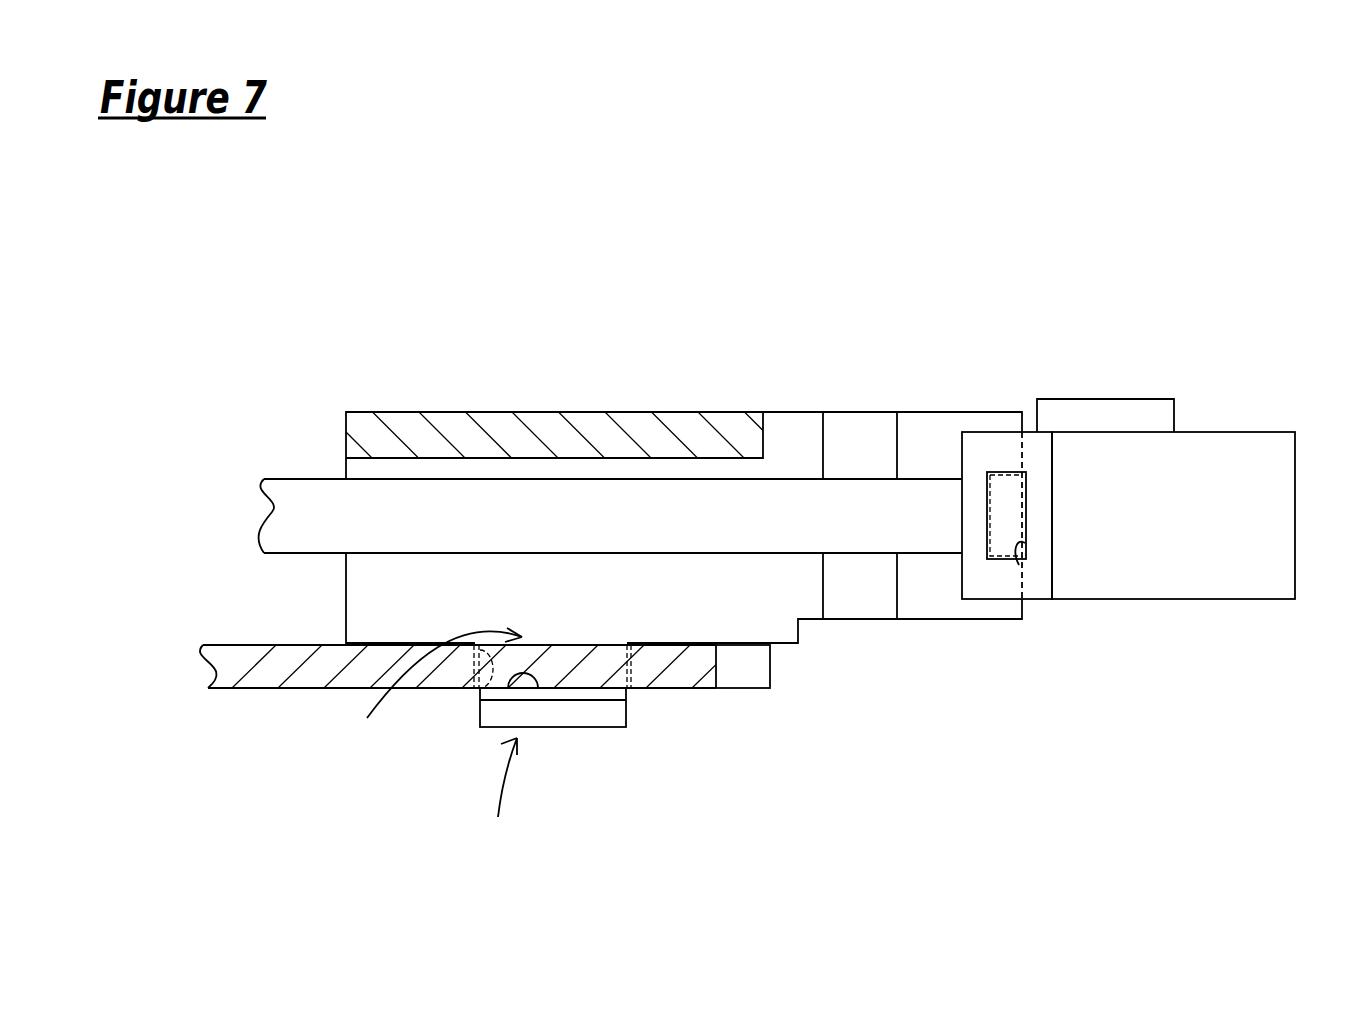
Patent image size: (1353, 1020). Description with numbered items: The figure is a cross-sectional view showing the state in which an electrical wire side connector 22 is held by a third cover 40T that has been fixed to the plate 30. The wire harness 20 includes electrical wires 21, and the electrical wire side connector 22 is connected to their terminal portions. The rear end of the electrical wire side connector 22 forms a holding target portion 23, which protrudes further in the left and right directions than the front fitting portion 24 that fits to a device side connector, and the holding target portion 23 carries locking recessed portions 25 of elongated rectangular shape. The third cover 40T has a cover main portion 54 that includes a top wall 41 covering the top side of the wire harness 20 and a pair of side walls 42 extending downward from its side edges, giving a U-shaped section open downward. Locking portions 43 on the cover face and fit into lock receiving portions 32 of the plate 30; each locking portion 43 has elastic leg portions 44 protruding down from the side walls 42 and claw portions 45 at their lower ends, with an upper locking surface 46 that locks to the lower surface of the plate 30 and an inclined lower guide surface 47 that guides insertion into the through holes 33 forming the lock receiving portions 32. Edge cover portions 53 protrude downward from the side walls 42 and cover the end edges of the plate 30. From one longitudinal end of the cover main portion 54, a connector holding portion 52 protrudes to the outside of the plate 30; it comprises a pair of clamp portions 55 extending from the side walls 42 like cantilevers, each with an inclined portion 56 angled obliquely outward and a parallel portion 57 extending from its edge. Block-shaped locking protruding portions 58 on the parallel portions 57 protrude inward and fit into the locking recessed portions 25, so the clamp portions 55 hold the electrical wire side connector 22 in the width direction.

The wire harness 20 is at (1148, 442).
The electrical wire 21 is at (297, 507).
The electrical wire side connector 22 is at (1258, 450).
The holding target portion 23 is at (996, 587).
The fitting portion 24 is at (1260, 583).
The locking recessed portion 25 is at (1019, 565).
The plate 30 is at (267, 678).
The lock receiving portion 32 is at (435, 691).
The through hole 33 is at (482, 694).
The third cover 40T is at (460, 420).
The top wall 41 is at (579, 428).
The side wall 42 is at (643, 580).
The locking portion 43 is at (500, 795).
The elastic leg portion 44 is at (568, 667).
The claw portion 45 is at (584, 718).
The locking surface 46 is at (510, 675).
The guide surface 47 is at (540, 720).
The connector holding portion 52 is at (870, 425).
The edge cover portion 53 is at (743, 678).
The cover main portion 54 is at (513, 428).
The clamp portion 55 is at (946, 428).
The inclined portion 56 is at (858, 607).
The parallel portion 57 is at (933, 607).
The locking protruding portion 58 is at (1008, 495).